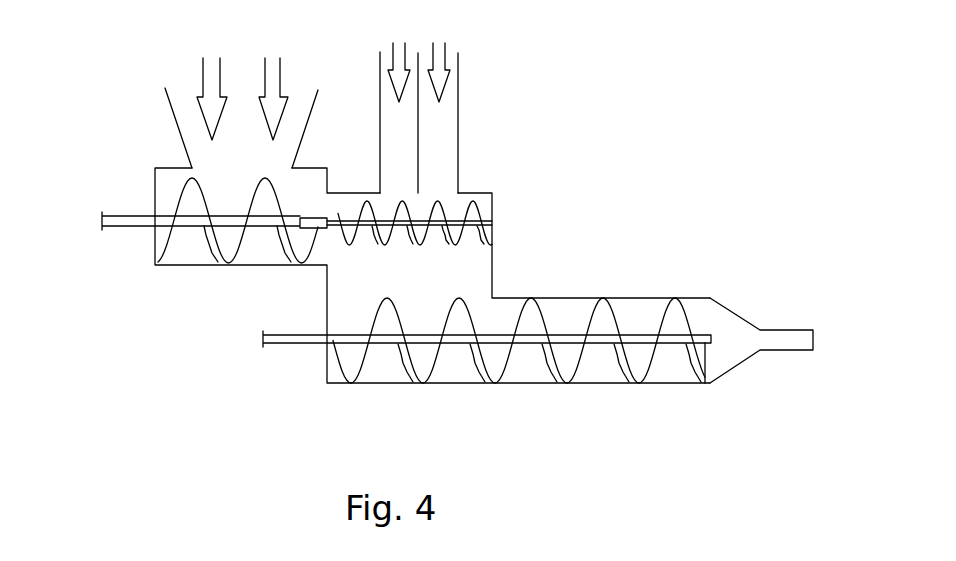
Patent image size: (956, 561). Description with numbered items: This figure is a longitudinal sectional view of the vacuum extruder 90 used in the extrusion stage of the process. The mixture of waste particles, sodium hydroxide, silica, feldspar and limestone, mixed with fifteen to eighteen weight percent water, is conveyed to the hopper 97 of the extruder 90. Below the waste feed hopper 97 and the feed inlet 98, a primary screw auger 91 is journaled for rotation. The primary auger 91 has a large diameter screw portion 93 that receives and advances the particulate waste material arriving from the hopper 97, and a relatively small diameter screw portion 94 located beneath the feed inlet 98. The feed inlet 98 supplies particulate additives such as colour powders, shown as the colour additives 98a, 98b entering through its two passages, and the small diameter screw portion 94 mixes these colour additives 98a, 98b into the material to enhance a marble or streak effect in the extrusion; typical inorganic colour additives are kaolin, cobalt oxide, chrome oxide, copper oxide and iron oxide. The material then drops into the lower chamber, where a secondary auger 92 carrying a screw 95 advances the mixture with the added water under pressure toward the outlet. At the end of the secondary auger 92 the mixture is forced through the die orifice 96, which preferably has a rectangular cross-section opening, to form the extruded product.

The vacuum extruder 90 is at (578, 92).
The primary screw auger 91 is at (128, 214).
The secondary auger 92 is at (293, 342).
The large diameter screw portion 93 is at (225, 247).
The small diameter screw portion 94 is at (475, 208).
The screw 95 is at (424, 363).
The die orifice 96 is at (783, 349).
The hopper 97 is at (170, 103).
The feed inlet 98 is at (461, 138).
The colour additive 98a is at (388, 113).
The colour additive 98b is at (440, 122).